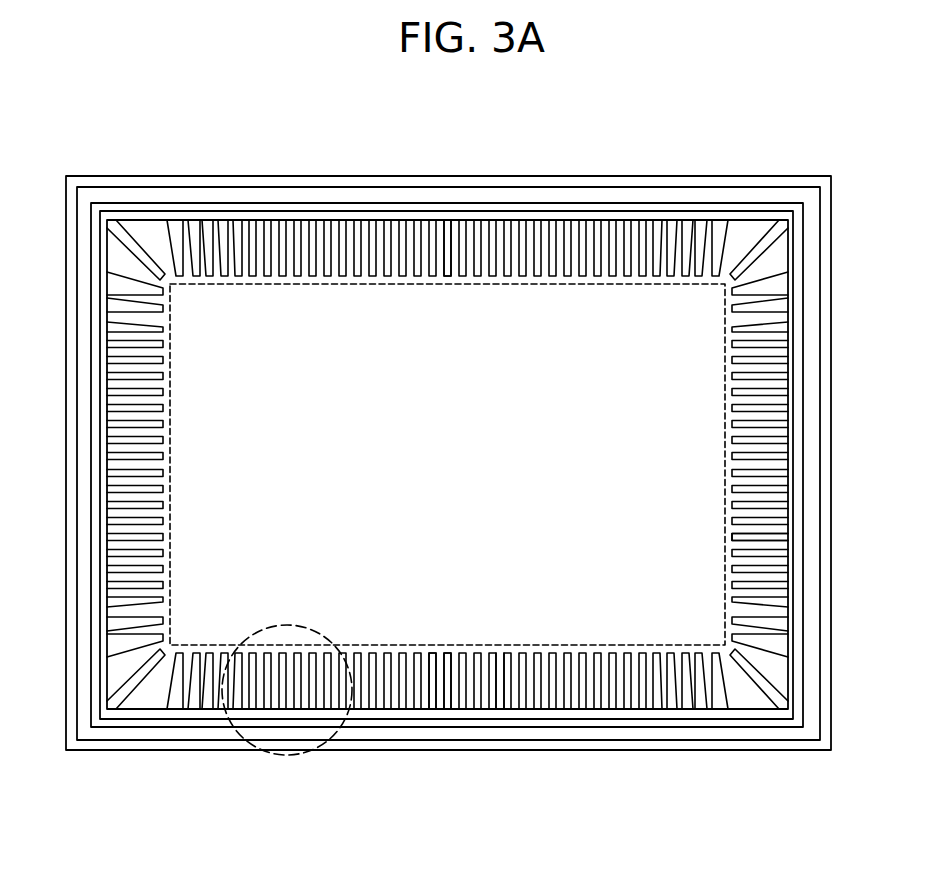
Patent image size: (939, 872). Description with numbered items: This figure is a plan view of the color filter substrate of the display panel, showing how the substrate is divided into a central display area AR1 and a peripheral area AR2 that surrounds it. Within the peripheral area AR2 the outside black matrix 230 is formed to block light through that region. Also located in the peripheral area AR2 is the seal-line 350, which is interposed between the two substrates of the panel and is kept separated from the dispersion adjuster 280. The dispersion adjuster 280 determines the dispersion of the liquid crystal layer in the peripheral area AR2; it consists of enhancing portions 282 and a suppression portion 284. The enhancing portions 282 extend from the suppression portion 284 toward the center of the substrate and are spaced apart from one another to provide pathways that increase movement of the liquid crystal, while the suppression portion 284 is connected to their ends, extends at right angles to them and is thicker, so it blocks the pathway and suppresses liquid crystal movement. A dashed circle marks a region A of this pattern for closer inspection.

The seal-line 350 is at (122, 728).
The outside black matrix 230 is at (557, 693).
The dispersion adjuster 280 is at (503, 541).
The enhancing portions 282 is at (432, 689).
The suppression portion 284 is at (498, 712).
The enlarged region A is at (262, 758).
The display area AR1 is at (680, 458).
The peripheral area AR2 is at (762, 535).